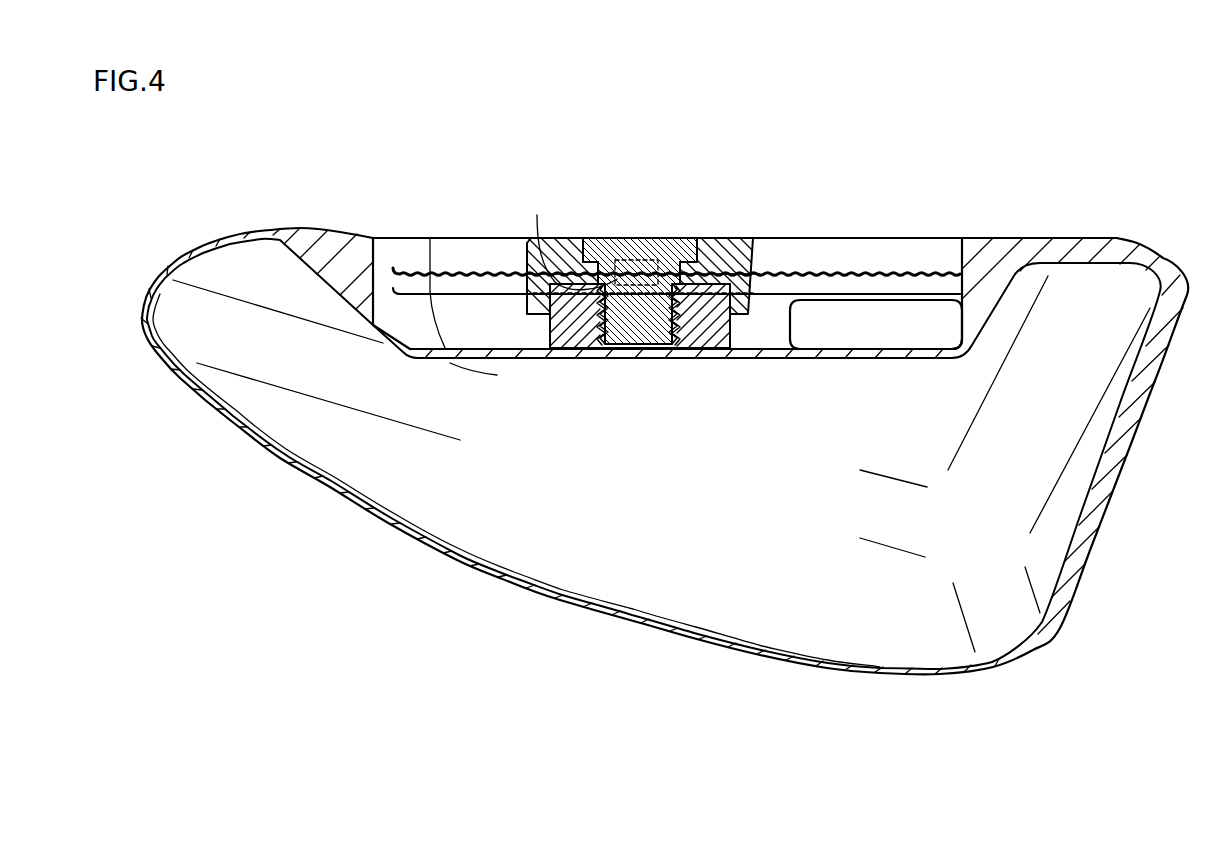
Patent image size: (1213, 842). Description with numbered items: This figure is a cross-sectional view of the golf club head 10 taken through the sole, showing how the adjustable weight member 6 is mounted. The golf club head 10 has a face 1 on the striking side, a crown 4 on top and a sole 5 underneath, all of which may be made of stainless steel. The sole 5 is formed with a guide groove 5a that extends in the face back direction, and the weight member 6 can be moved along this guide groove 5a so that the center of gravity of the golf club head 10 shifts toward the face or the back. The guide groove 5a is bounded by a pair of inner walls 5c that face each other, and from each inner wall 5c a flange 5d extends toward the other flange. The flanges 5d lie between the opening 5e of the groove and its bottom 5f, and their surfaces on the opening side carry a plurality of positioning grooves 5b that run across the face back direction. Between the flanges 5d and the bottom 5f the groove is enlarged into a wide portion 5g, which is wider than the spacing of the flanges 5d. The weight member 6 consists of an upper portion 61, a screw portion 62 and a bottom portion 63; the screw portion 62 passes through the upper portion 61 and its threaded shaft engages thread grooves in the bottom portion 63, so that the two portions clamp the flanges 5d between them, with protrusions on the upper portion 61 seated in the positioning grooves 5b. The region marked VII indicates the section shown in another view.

The golf club head 10 is at (1177, 207).
The face 1 is at (1146, 413).
The crown 4 is at (849, 674).
The sole 5 is at (1127, 237).
The guide groove 5a is at (765, 237).
The positioning grooves 5b is at (797, 273).
The inner walls 5c is at (843, 263).
The flanges 5d is at (877, 283).
The opening 5e is at (910, 233).
The bottom 5f is at (932, 347).
The wide portion 5g is at (795, 325).
The weight member 6 is at (555, 197).
The upper portion 61 is at (567, 250).
The screw portion 62 is at (635, 252).
The bottom portion 63 is at (705, 314).
The section line VII is at (570, 241).